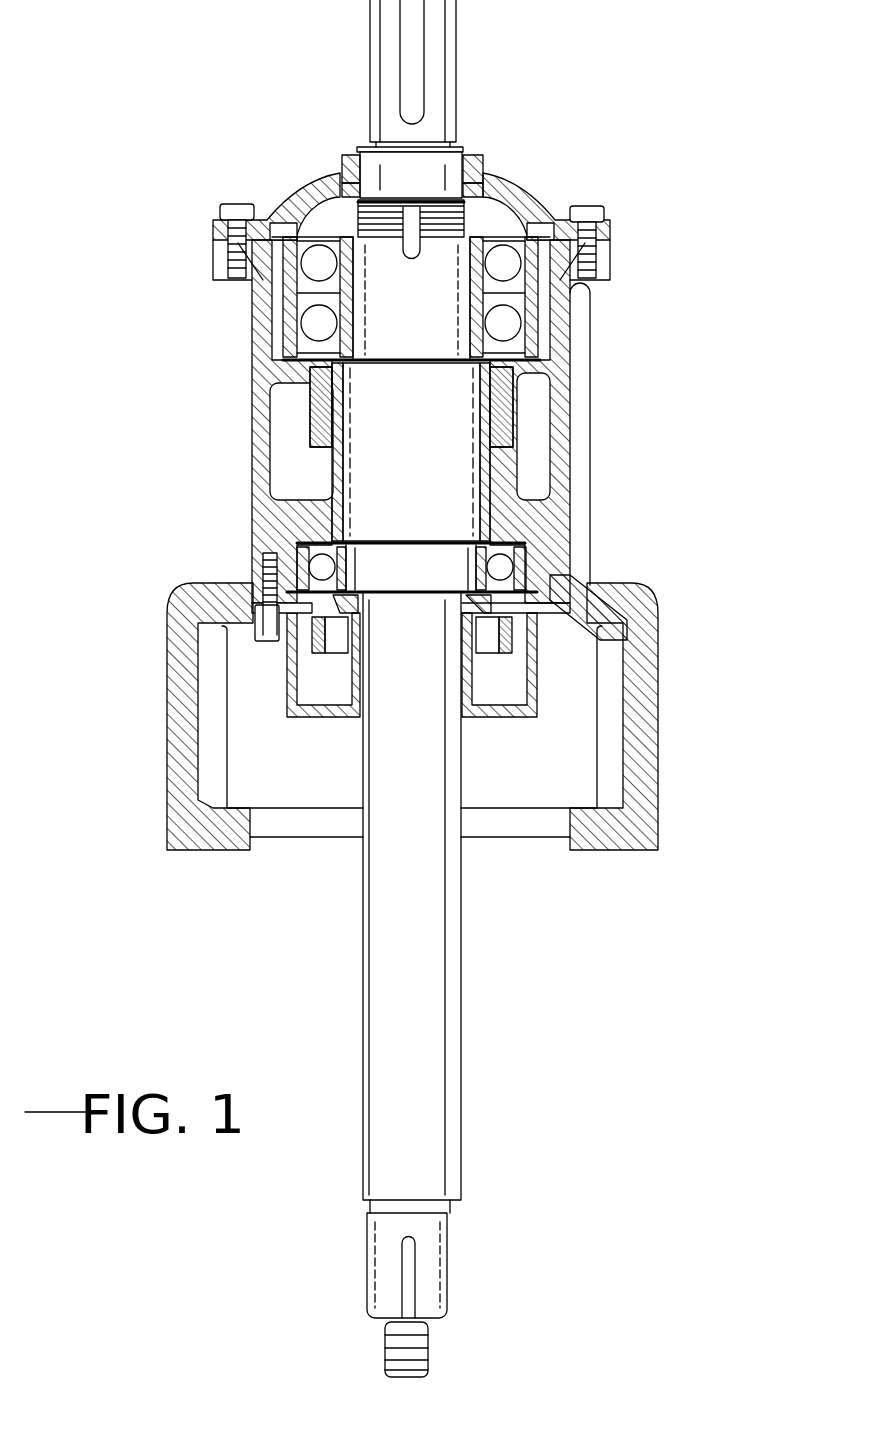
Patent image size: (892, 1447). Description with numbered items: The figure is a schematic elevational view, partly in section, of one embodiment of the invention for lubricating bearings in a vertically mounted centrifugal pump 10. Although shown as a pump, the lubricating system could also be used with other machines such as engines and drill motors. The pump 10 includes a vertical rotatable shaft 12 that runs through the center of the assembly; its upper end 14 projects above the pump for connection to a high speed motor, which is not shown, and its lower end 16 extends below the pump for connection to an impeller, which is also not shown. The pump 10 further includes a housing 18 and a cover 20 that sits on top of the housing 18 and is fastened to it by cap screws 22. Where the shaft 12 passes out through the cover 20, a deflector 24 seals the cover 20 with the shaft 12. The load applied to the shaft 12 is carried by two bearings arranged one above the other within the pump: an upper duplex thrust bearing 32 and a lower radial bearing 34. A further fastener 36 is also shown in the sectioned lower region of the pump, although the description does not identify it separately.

The centrifugal pump 10 is at (630, 131).
The shaft 12 is at (427, 1038).
The upper end 14 is at (457, 35).
The lower end 16 is at (435, 1267).
The housing 18 is at (627, 607).
The cover 20 is at (517, 188).
The cap screws 22 is at (243, 203).
The deflector 24 is at (348, 154).
The upper duplex thrust bearing 32 is at (238, 352).
The lower radial bearing 34 is at (232, 561).
The bolt 36 is at (268, 647).